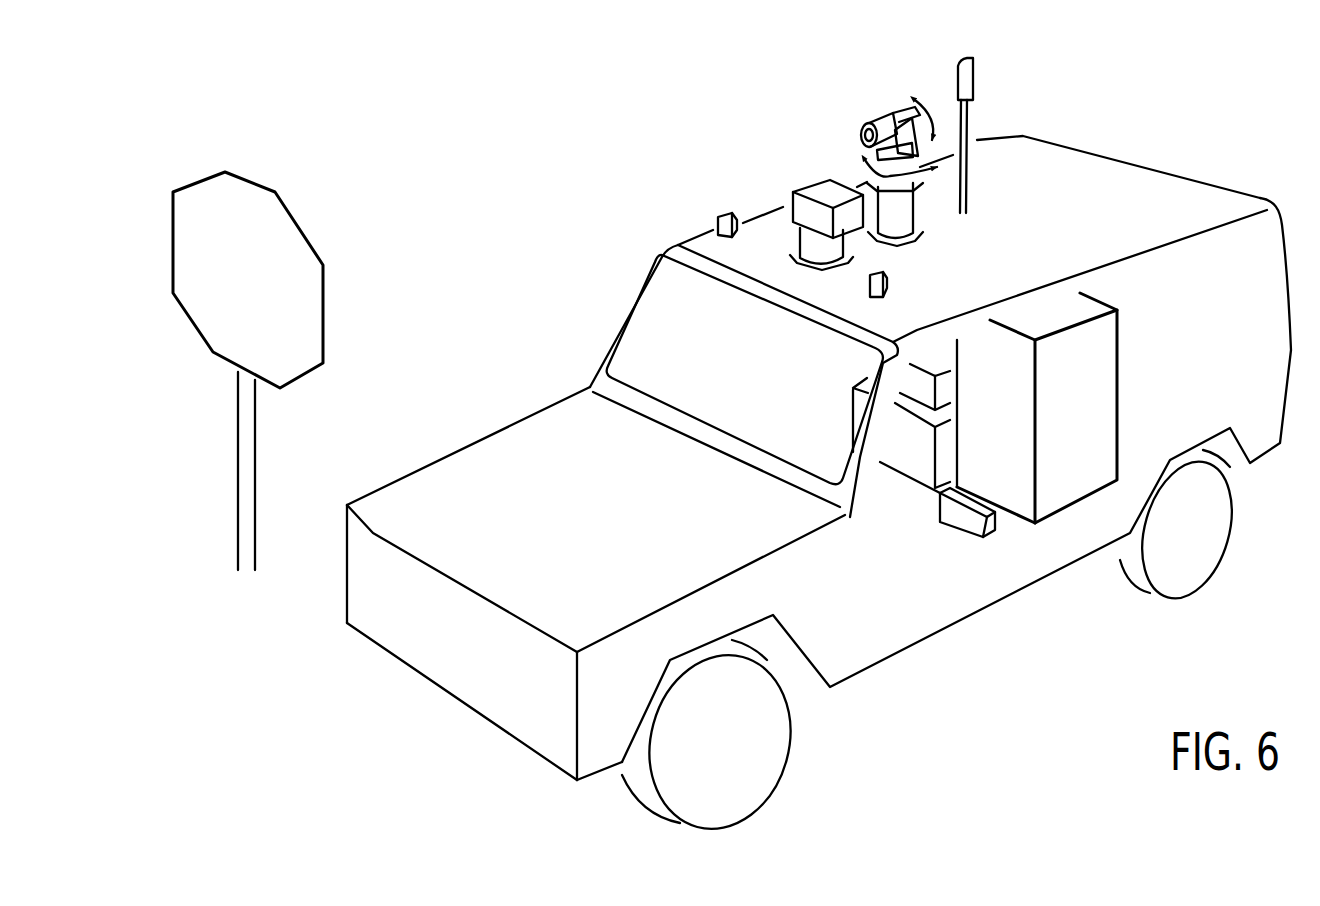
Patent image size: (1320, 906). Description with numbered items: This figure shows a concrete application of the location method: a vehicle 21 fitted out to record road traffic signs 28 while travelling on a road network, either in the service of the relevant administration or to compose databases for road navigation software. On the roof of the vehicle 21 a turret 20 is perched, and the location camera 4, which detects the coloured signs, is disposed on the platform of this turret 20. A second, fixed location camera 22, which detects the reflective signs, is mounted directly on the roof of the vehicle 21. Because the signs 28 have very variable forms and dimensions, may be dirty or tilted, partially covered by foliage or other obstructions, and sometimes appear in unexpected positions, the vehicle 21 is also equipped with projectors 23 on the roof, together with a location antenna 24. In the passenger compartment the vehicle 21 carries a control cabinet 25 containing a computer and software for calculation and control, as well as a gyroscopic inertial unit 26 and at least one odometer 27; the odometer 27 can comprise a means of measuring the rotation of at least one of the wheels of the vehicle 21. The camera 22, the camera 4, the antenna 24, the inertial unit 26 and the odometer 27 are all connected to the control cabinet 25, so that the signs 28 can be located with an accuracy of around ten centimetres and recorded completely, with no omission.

The location camera 4 is at (891, 100).
The turret 20 is at (860, 145).
The vehicle 21 is at (1003, 607).
The location camera 22 is at (808, 182).
The projectors 23 is at (712, 223).
The location antenna 24 is at (980, 80).
The control cabinet 25 is at (1108, 388).
The gyroscopic inertial unit 26 is at (940, 388).
The odometer 27 is at (1017, 523).
The road traffic signs 28 is at (302, 216).